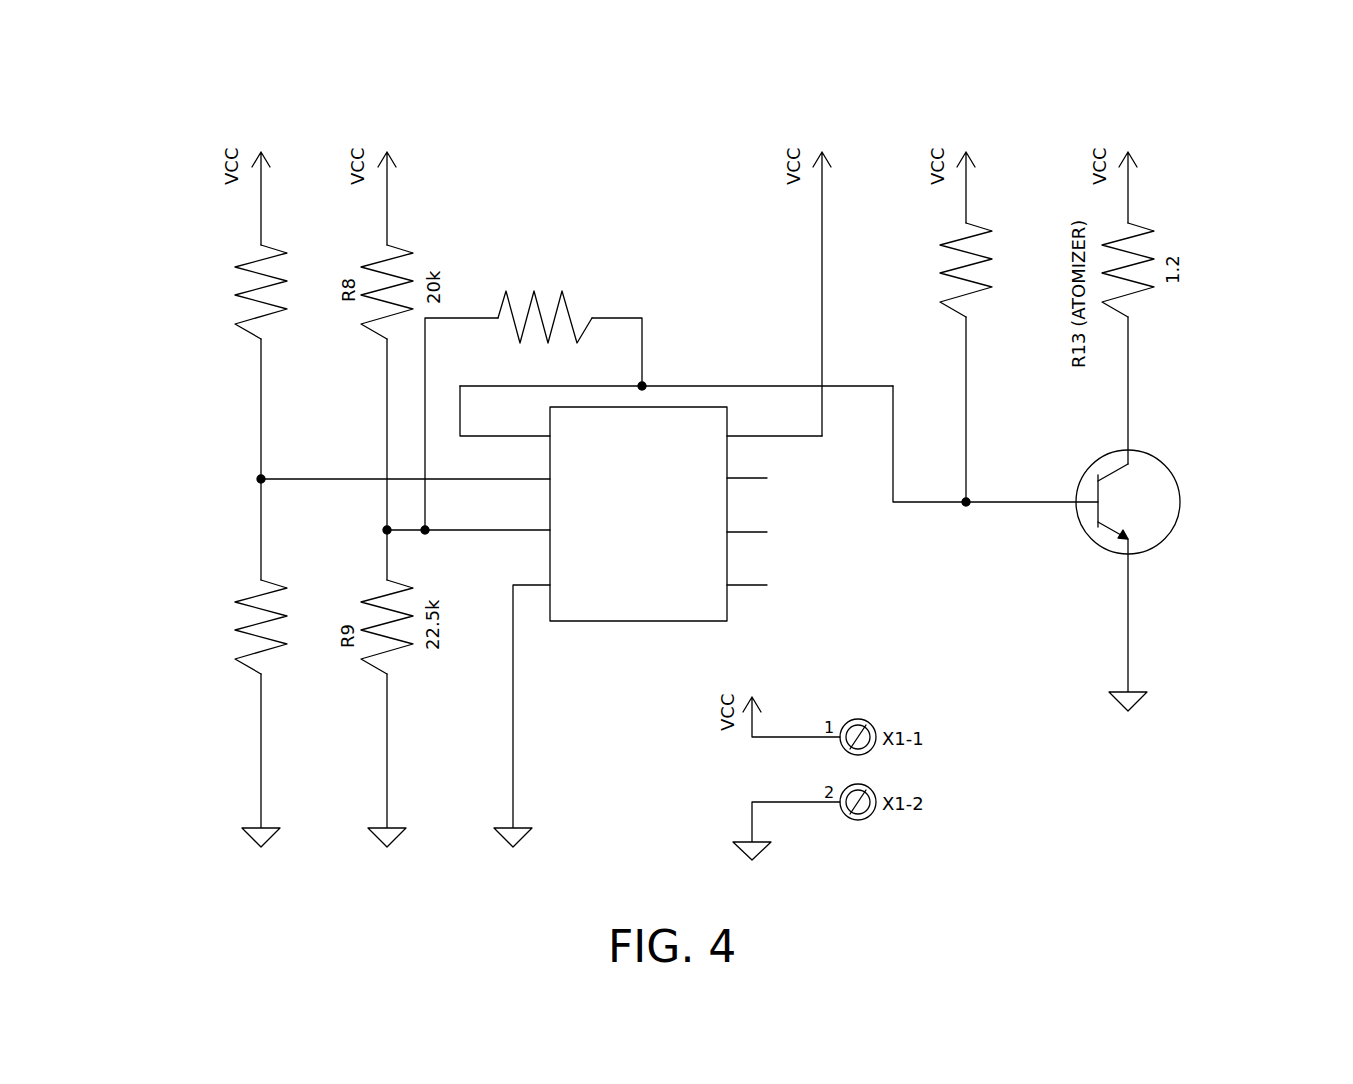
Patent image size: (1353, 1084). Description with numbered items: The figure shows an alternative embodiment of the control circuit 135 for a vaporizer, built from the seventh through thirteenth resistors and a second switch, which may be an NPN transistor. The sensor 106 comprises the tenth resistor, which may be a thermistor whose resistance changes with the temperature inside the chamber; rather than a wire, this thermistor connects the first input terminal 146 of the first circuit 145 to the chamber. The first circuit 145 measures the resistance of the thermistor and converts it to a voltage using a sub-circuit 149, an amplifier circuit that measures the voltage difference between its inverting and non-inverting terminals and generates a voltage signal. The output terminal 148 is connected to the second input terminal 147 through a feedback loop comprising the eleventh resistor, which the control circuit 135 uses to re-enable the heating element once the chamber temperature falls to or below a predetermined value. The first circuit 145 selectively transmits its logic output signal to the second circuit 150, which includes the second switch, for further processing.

The sensor 106 is at (186, 710).
The control circuit 135 is at (976, 98).
The first circuit 145 is at (612, 285).
The first input terminal 146 is at (263, 476).
The second input terminal 147 is at (425, 534).
The output terminal 148 is at (644, 384).
The sub-circuit 149 is at (635, 621).
The second circuit 150 is at (1184, 371).